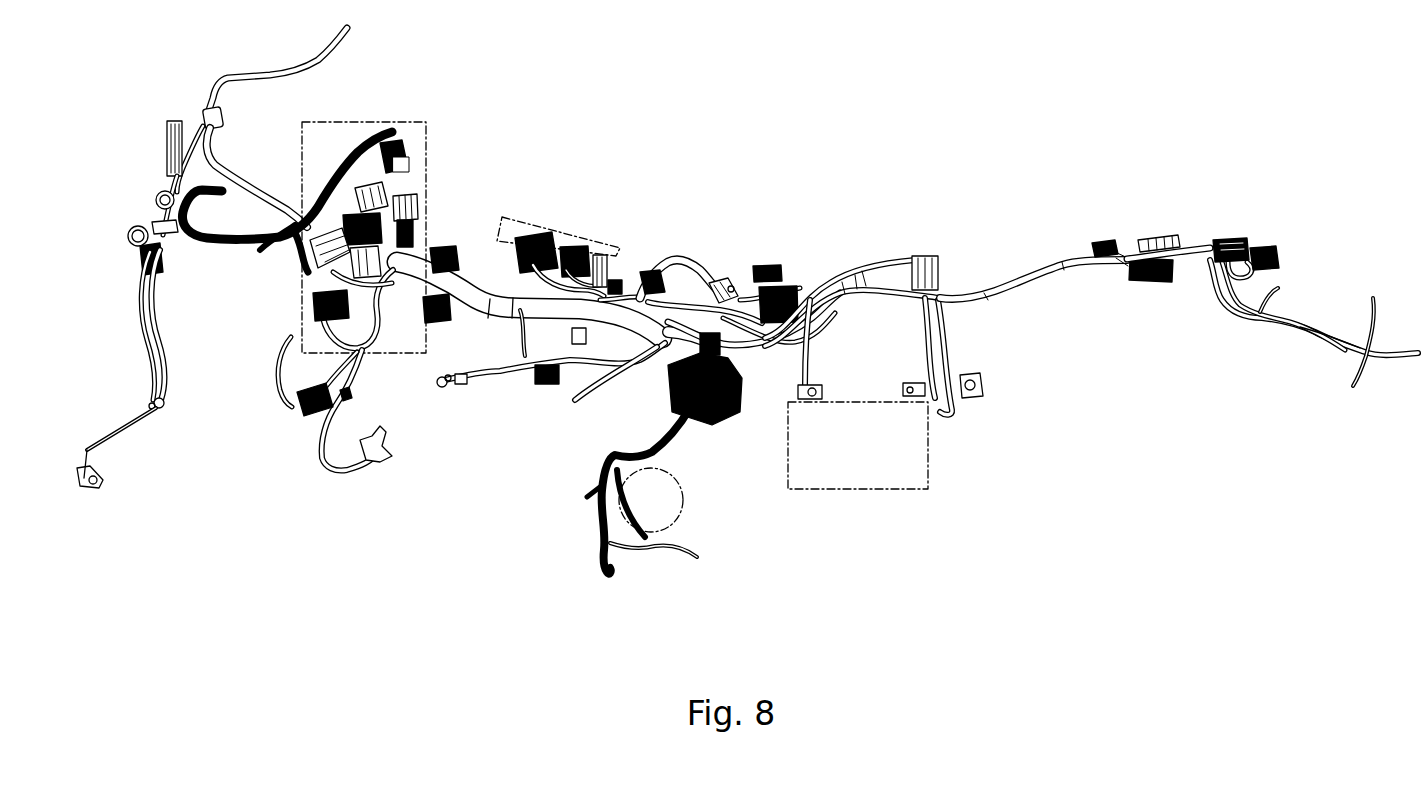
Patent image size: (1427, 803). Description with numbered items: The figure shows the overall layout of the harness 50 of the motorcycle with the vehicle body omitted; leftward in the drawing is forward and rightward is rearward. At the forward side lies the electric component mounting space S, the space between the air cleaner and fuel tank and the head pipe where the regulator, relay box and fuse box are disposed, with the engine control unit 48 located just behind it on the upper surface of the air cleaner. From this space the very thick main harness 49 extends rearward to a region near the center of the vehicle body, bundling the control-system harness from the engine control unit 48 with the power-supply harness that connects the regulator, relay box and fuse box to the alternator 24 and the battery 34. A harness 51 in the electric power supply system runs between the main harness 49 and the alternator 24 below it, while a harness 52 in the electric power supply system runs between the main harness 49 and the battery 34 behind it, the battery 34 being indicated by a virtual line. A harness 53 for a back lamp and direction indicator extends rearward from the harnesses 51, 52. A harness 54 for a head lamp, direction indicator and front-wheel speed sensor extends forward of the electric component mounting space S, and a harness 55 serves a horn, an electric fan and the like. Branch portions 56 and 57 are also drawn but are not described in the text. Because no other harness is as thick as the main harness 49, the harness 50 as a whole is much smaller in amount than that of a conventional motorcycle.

The harness 50 is at (930, 186).
The electric component mounting space S is at (430, 158).
The engine control unit 48 is at (570, 238).
The wire branch 57 is at (686, 265).
The harness in the electric power supply system 52 is at (809, 295).
The harness 53 is at (1012, 284).
The harness 54 is at (185, 237).
The harness 55 is at (362, 383).
The main harness 49 is at (511, 318).
The connector 56 is at (524, 375).
The harness in the electric power supply system 51 is at (683, 457).
The alternator 24 is at (683, 511).
The battery 34 is at (928, 450).